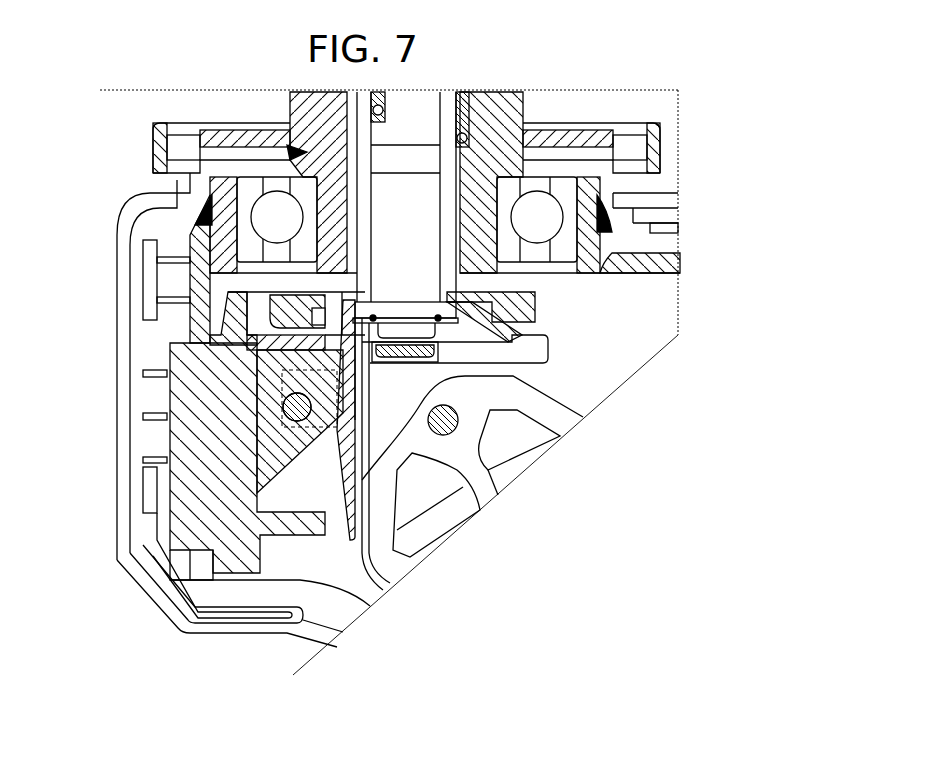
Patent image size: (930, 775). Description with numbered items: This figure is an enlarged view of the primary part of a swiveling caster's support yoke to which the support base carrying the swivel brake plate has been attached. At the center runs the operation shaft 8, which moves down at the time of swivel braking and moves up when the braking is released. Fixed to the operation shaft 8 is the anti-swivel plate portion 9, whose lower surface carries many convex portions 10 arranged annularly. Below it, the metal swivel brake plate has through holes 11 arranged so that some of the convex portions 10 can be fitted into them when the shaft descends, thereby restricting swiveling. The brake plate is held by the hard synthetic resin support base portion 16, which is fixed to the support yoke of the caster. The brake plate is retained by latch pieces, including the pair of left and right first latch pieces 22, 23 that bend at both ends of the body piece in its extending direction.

The operation shaft 8 is at (411, 215).
The anti-swivel plate portion 9 is at (534, 350).
The convex portions 10 is at (297, 313).
The through holes 11 is at (255, 350).
The support base portion 16 is at (225, 423).
The first latch piece 22 is at (205, 419).
The first latch piece 23 is at (203, 568).